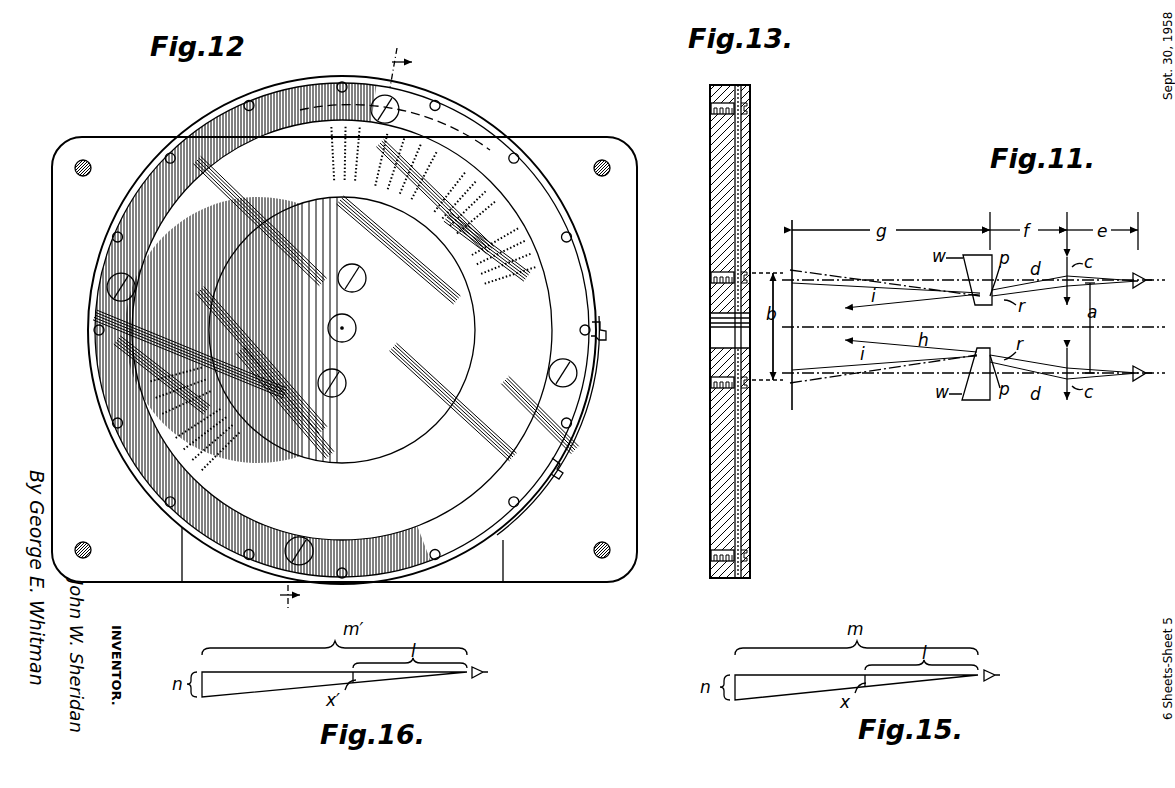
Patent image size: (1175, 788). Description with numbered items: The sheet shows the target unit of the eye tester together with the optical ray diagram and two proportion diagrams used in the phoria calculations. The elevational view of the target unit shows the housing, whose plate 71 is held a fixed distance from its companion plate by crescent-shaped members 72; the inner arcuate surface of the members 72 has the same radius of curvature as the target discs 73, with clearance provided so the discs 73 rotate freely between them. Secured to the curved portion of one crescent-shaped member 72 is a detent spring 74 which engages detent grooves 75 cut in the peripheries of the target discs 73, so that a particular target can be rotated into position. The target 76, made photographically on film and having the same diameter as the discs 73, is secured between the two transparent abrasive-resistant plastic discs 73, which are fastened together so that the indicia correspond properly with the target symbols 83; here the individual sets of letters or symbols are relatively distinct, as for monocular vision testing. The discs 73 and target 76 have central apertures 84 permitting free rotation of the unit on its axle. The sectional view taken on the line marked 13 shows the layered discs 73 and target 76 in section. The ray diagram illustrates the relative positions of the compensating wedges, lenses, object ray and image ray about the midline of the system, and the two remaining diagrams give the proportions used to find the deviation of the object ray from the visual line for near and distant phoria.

In FIG. 12, the section line of FIG. 13 is at (343, 332).
In FIG. 12, the plate 71 is at (475, 570).
In FIG. 12, the crescent-shaped members 72 is at (620, 250).
In FIG. 12, the target discs 73 is at (470, 136).
In FIG. 13, the target discs 73 is at (742, 131).
In FIG. 12, the detent spring 74 is at (606, 333).
In FIG. 12, the detent grooves 75 is at (438, 104).
In FIG. 12, the target 76 is at (450, 186).
In FIG. 13, the target 76 is at (730, 153).
In FIG. 12, the target symbols 83 is at (480, 217).
In FIG. 12, the central apertures 84 is at (356, 321).
In FIG. 13, the central apertures 84 is at (722, 334).